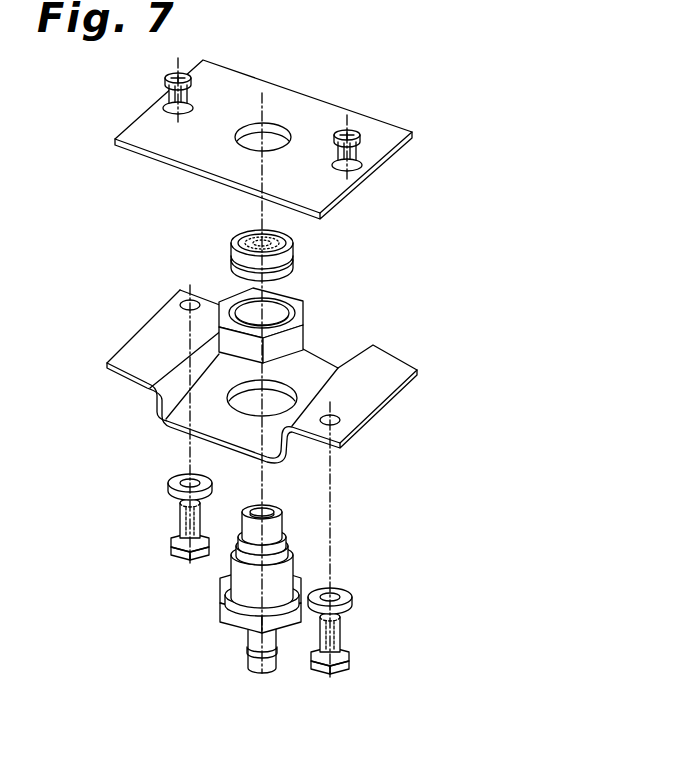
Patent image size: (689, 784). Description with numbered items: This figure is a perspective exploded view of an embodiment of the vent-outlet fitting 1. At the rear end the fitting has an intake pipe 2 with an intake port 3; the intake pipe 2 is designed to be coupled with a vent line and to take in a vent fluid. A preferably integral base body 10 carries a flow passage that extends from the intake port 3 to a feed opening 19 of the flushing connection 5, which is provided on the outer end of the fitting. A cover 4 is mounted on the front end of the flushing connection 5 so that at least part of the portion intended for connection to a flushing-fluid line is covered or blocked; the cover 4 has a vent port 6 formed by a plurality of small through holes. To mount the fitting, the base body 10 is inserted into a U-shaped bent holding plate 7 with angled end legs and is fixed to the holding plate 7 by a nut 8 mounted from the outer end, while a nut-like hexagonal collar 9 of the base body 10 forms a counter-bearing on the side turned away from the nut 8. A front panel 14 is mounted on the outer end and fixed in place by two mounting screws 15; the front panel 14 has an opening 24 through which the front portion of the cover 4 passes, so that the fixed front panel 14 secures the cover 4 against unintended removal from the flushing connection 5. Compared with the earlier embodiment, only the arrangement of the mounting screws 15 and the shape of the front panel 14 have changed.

The vent-outlet fitting 1 is at (521, 253).
The intake pipe 2 is at (273, 661).
The intake port 3 is at (261, 675).
The cover 4 is at (236, 262).
The flushing connection 5 is at (275, 534).
The vent port 6 is at (281, 233).
The holding plate 7 is at (371, 388).
The nut 8 is at (304, 311).
The hexagonal collar 9 is at (234, 620).
The base body 10 is at (276, 413).
The front panel 14 is at (348, 192).
The mounting screws 15 is at (166, 76).
The feed opening 19 is at (273, 506).
The opening 24 is at (276, 131).